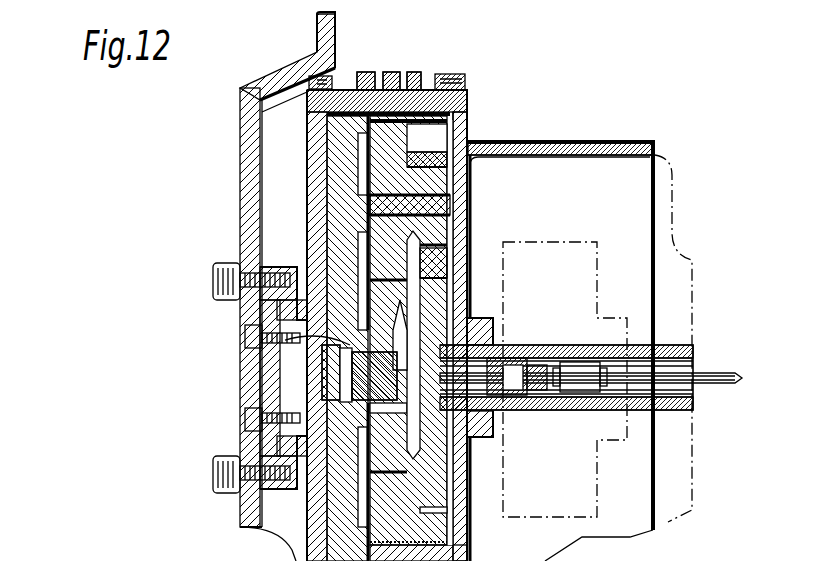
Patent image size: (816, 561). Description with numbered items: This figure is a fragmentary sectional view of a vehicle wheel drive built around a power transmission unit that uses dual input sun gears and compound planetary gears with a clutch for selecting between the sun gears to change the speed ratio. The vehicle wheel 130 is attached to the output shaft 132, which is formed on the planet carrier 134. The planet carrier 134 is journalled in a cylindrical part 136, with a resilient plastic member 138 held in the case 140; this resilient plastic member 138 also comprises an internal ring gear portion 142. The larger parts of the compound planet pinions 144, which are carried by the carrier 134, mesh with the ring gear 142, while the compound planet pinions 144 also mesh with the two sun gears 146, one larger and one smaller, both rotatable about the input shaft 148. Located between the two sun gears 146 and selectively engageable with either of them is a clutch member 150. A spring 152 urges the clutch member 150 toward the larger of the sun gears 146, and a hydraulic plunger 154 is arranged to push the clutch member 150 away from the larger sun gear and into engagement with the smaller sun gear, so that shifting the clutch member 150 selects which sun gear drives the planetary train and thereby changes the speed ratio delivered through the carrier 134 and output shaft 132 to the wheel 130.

The vehicle wheel 130 is at (243, 233).
The output shaft 132 is at (265, 378).
The planet carrier 134 is at (340, 234).
The cylindrical part 136 is at (363, 88).
The resilient plastic member 138 is at (390, 86).
The case 140 is at (413, 74).
The internal ring gear portion 142 is at (460, 140).
The planet pinions 144 is at (468, 136).
The sun gears 146 is at (455, 264).
The input shaft 148 is at (567, 344).
The clutch member 150 is at (470, 312).
The spring 152 is at (340, 386).
The hydraulic plunger 154 is at (513, 408).